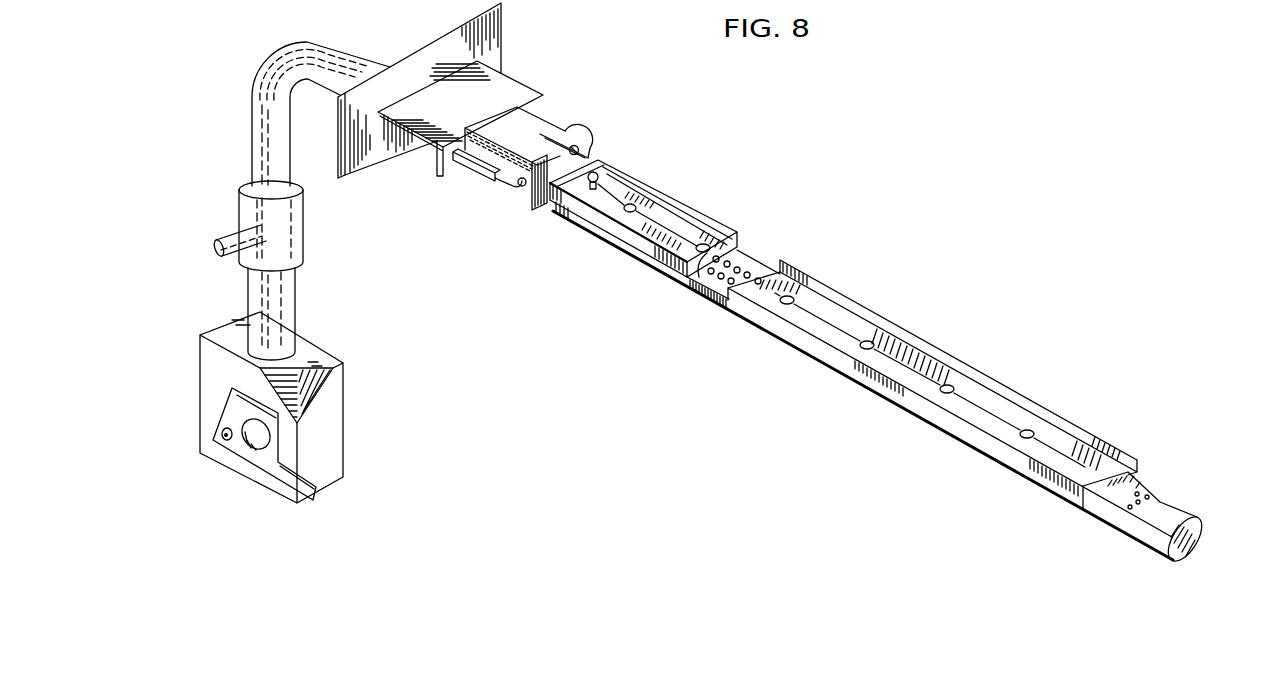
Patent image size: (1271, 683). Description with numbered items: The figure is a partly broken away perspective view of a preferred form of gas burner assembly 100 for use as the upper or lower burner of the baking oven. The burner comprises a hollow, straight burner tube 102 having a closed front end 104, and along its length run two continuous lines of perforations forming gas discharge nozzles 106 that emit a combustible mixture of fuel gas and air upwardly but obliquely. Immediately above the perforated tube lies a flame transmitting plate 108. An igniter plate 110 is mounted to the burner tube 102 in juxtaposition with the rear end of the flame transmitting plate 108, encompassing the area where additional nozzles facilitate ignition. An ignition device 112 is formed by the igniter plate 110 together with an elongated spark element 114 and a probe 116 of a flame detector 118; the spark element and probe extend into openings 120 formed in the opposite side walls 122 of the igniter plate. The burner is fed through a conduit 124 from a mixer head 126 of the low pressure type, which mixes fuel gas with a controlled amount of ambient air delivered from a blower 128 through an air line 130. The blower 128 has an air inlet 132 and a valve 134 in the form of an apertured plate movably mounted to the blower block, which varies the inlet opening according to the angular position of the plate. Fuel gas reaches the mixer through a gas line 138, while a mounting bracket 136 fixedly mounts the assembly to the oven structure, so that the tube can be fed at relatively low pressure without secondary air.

The gas burner assembly 100 is at (885, 253).
The burner tube 102 is at (716, 305).
The closed front end 104 is at (1188, 533).
The gas discharge nozzles 106 is at (698, 288).
The flame transmitting plate 108 is at (958, 380).
The igniter plate 110 is at (533, 128).
The ignition device 112 is at (457, 183).
The spark element 114 is at (492, 185).
The probe 116 is at (574, 153).
The flame detector 118 is at (567, 123).
The openings 120 is at (580, 151).
The side walls 122 is at (535, 175).
The conduit 124 is at (288, 53).
The mixer head 126 is at (301, 238).
The blower 128 is at (333, 408).
The air line 130 is at (291, 315).
The air inlet 132 is at (262, 449).
The valve 134 is at (237, 447).
The mounting bracket 136 is at (498, 35).
The gas line 138 is at (224, 233).